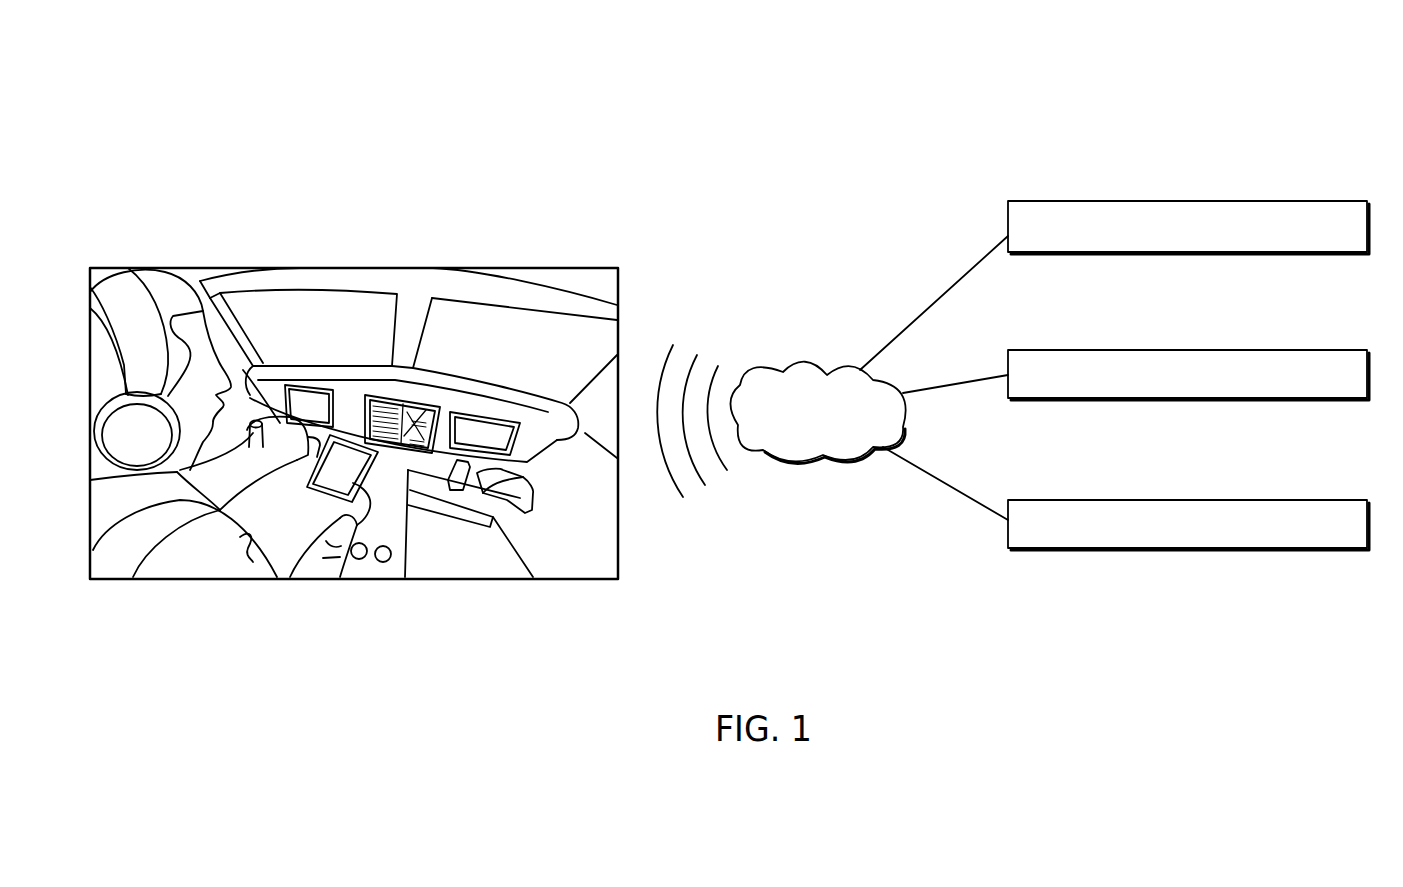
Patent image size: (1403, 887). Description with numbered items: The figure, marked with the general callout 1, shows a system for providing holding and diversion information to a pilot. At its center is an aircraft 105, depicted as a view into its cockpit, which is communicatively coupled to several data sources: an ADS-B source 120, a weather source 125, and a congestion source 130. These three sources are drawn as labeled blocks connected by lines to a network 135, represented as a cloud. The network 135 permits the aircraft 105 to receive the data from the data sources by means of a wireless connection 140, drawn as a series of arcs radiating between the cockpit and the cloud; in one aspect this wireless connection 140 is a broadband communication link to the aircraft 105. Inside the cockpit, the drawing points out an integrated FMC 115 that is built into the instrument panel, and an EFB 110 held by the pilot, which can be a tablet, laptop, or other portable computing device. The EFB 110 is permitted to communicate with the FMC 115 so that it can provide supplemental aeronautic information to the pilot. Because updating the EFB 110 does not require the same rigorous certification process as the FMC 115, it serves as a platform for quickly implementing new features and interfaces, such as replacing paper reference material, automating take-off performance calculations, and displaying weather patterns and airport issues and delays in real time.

The system 1 is at (1340, 80).
The aircraft 105 is at (650, 262).
The EFB 110 is at (336, 448).
The FMC 115 is at (453, 390).
The ADS-B source 120 is at (1316, 243).
The weather source 125 is at (1341, 392).
The congestion source 130 is at (1361, 543).
The network 135 is at (842, 442).
The wireless connection 140 is at (716, 508).